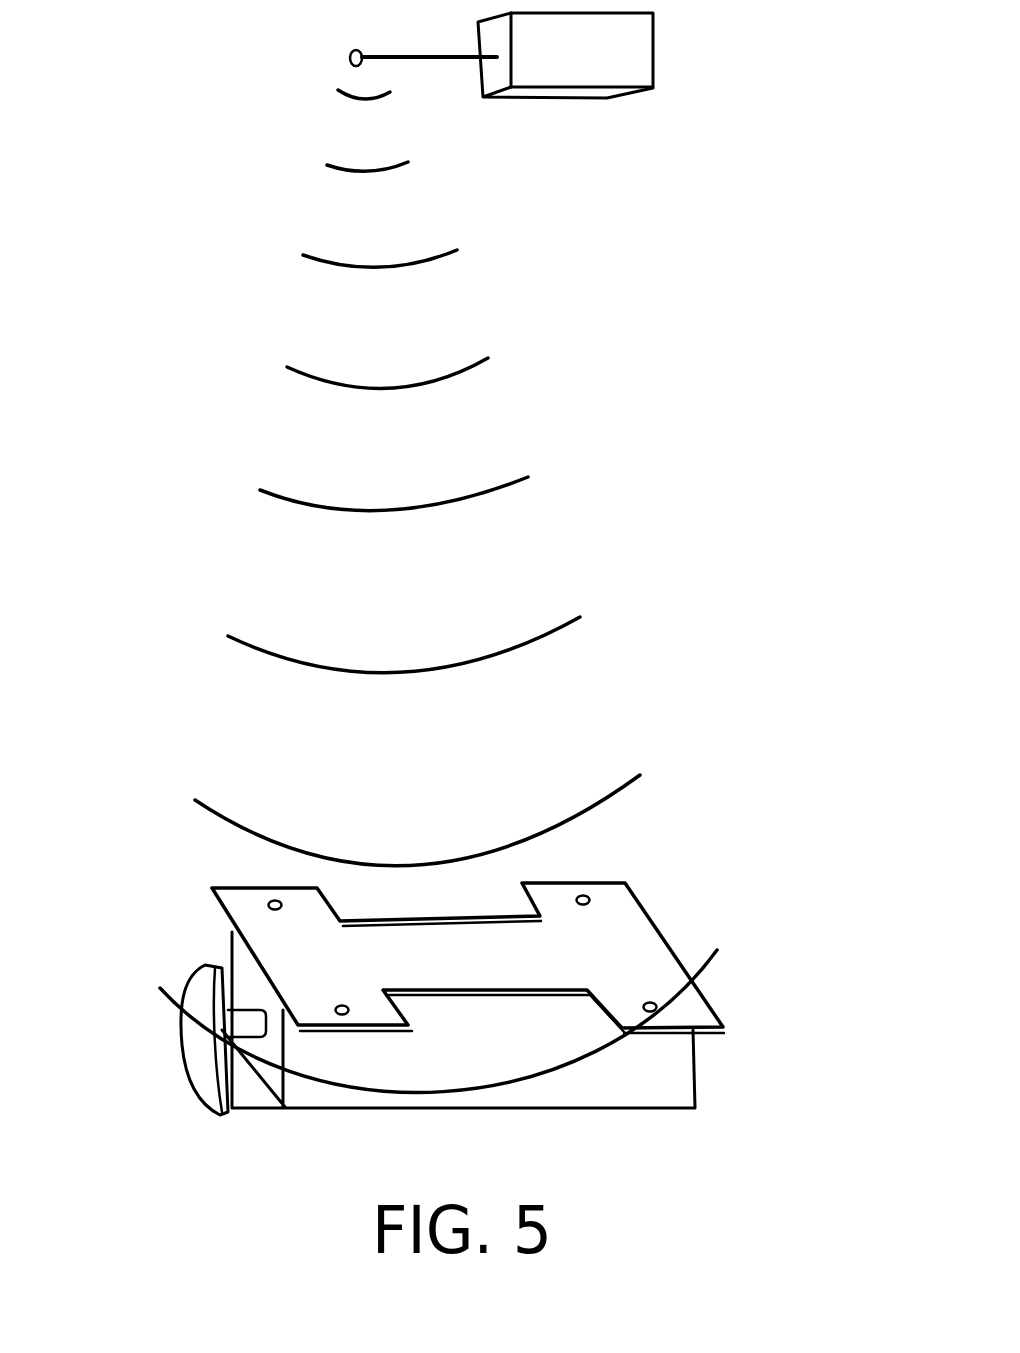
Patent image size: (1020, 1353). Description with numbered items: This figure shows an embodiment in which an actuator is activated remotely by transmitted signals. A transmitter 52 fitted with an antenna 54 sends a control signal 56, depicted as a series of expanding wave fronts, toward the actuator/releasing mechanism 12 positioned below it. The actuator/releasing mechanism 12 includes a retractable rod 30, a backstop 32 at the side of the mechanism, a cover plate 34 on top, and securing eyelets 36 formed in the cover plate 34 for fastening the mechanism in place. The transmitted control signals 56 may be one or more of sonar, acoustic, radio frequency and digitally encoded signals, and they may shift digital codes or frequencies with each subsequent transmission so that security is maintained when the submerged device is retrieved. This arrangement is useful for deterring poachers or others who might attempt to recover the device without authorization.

The actuator/releasing mechanism 12 is at (322, 1121).
The retractable rod 30 is at (245, 1008).
The backstop 32 is at (200, 1040).
The cover plate 34 is at (618, 930).
The securing eyelets 36 is at (282, 908).
The transmitter 52 is at (590, 50).
The antenna 54 is at (347, 62).
The control signal 56 is at (403, 265).